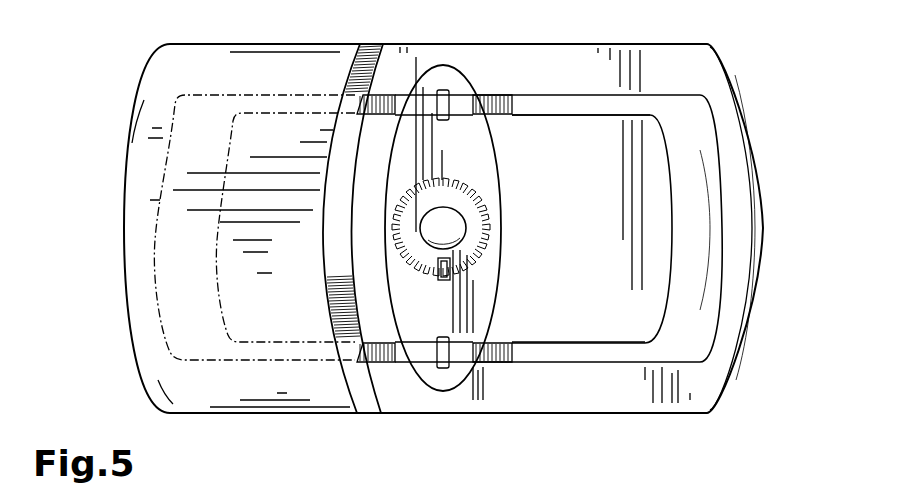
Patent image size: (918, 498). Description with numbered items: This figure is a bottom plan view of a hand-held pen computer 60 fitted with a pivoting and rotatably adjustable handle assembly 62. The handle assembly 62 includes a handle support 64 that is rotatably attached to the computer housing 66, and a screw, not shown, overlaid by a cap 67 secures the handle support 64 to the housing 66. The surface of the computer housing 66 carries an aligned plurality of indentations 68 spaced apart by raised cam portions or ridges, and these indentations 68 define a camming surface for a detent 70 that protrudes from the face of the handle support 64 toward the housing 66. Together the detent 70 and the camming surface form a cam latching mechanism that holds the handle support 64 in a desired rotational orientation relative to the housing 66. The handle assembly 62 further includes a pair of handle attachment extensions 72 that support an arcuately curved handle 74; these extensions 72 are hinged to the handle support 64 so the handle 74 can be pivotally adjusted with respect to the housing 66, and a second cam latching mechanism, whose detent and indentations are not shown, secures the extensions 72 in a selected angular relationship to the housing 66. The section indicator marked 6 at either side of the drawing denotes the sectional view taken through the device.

The pen computer 60 is at (102, 301).
The handle assembly 62 is at (484, 75).
The handle support 64 is at (418, 323).
The computer housing 66 is at (203, 63).
The cap 67 is at (445, 222).
The indentations 68 is at (288, 102).
The detent 70 is at (450, 275).
The handle attachment extensions 72 is at (627, 105).
The arcuately curved handle 74 is at (690, 220).
The section line 6-6 indicator 6 is at (88, 423).